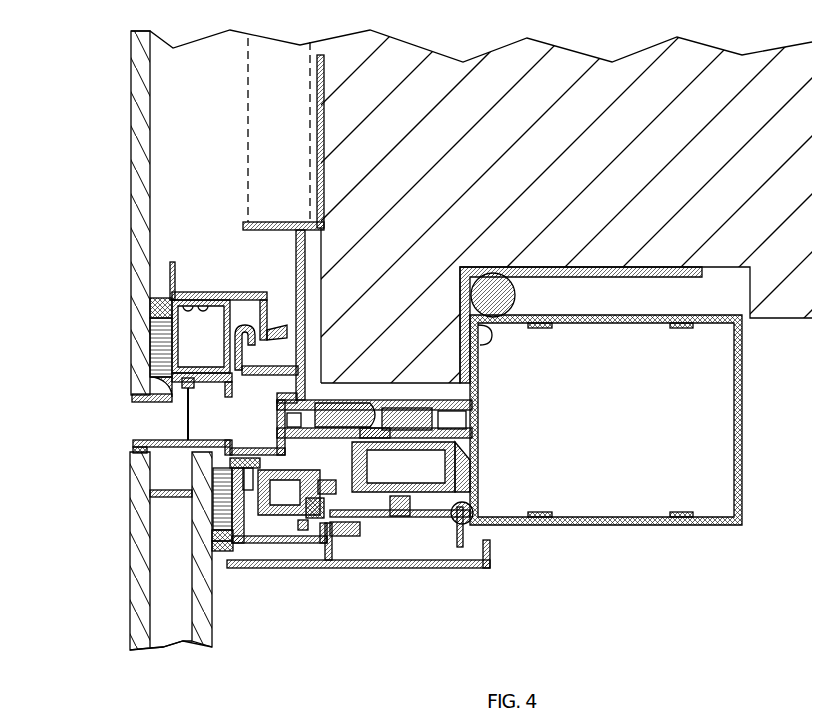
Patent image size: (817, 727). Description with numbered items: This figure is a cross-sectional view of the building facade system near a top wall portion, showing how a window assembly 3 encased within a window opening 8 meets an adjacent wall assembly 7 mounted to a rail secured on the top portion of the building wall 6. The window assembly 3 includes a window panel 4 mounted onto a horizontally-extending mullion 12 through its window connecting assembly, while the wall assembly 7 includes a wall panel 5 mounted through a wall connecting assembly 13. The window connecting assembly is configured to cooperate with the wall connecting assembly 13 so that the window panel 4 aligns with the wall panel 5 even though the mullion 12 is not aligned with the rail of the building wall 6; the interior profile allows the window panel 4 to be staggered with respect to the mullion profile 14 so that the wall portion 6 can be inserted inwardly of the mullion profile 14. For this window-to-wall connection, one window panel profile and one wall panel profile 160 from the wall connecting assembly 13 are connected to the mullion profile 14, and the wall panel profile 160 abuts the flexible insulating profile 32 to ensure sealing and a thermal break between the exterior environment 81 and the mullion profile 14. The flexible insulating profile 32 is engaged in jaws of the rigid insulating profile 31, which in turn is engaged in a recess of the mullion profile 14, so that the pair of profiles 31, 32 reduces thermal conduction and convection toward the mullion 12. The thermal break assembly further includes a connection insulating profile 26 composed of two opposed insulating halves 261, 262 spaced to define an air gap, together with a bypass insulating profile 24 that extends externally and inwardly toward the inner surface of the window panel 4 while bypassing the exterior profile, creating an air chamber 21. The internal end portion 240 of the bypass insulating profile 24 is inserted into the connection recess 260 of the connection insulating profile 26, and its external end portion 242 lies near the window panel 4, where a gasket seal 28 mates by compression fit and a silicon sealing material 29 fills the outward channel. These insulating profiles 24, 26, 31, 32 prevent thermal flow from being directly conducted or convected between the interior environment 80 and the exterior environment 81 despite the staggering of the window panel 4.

The window assembly 3 is at (103, 526).
The window panel 4 is at (174, 668).
The wall panel 5 is at (136, 244).
The building wall 6 is at (421, 210).
The wall assembly 7 is at (101, 154).
The window opening 8 is at (686, 607).
The mullion 12 is at (599, 534).
The wall connecting assembly 13 is at (270, 406).
The mullion profile 14 is at (425, 438).
The air chamber 21 is at (263, 523).
The bypass insulating profile 24 is at (299, 436).
The connection insulating profile 26 is at (352, 447).
The gasket seal 28 is at (222, 543).
The sealing material 29 is at (228, 502).
The rigid insulating profile 31 is at (402, 518).
The flexible insulating profile 32 is at (298, 530).
The interior environment 80 is at (270, 661).
The exterior environment 81 is at (83, 587).
The wall panel profile 160 is at (277, 401).
The internal end portion 240 is at (313, 524).
The external end portion 242 is at (232, 550).
The connection recess 260 is at (325, 507).
The first insulating halve 261 is at (325, 484).
The second insulating halve 262 is at (374, 438).